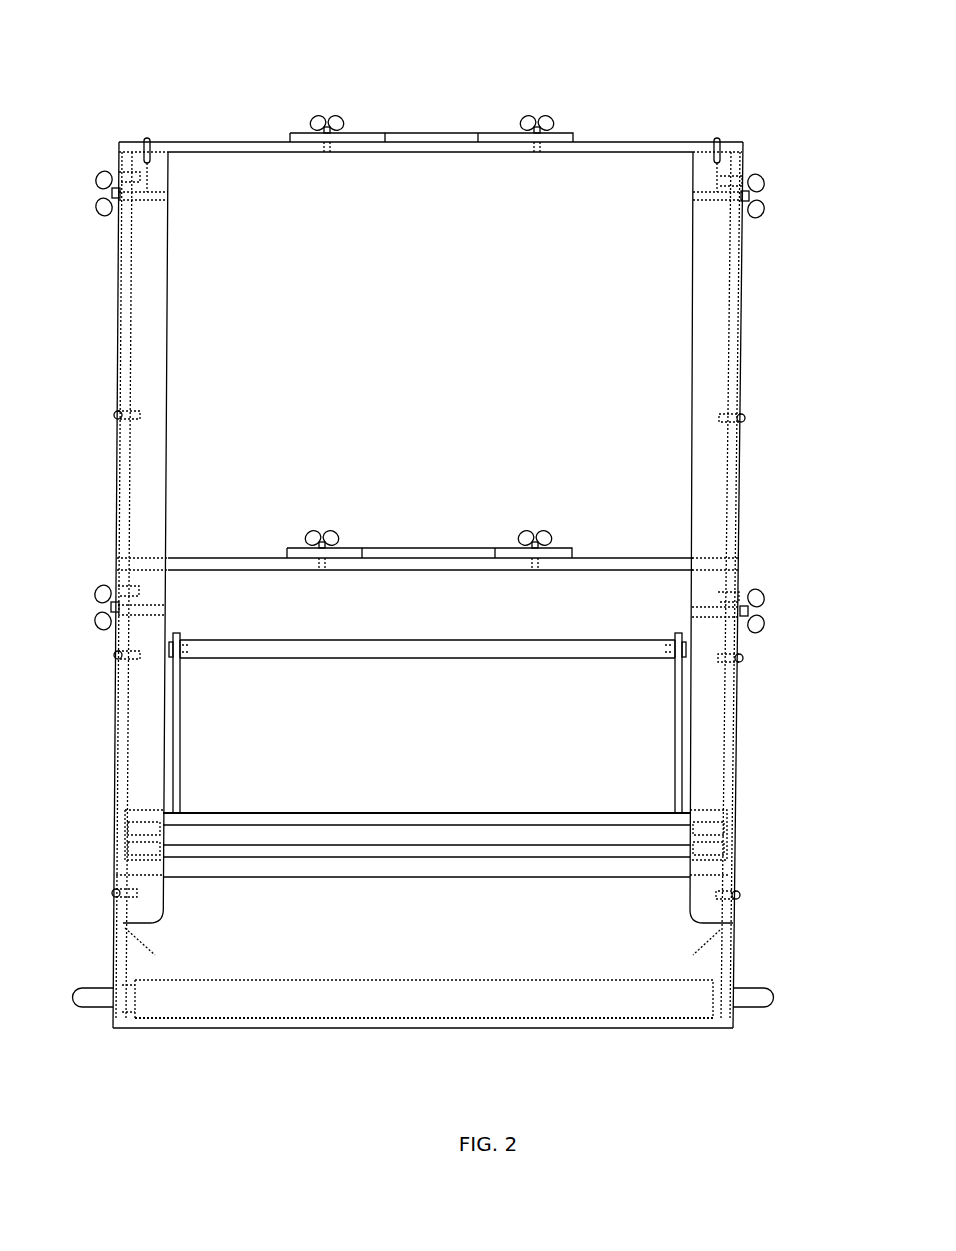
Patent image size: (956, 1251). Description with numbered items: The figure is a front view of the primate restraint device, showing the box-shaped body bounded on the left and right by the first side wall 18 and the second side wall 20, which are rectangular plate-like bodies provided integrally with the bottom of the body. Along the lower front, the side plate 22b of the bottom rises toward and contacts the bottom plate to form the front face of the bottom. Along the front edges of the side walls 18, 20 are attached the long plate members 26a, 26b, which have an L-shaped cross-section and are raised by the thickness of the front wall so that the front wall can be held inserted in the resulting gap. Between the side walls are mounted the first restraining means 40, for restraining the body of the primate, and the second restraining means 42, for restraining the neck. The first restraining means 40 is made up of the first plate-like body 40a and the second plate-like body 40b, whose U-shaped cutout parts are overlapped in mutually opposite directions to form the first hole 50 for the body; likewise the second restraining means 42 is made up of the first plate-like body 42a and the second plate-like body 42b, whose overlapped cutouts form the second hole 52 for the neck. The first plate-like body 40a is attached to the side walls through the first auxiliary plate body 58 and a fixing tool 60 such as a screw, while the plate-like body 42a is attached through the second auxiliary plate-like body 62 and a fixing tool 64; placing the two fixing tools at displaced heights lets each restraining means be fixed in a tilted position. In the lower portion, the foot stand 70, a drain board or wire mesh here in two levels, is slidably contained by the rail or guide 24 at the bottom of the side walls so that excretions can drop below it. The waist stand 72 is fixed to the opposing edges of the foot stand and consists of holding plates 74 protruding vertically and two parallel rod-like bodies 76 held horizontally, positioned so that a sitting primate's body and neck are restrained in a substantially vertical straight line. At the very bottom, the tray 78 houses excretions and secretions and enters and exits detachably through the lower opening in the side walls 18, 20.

The first side wall 18 is at (738, 745).
The second side wall 20 is at (117, 743).
The side plate 22b is at (326, 948).
The rail or guide 24 is at (117, 842).
The long plate member 26a is at (713, 910).
The long plate member 26b is at (137, 907).
The first restraining means 40 is at (515, 497).
The first plate-like body 40a is at (647, 558).
The second plate-like body 40b is at (508, 550).
The second restraining means 42 is at (431, 79).
The first plate-like body 42a is at (640, 145).
The second plate-like body 42b is at (498, 137).
The first hole 50 is at (428, 553).
The second hole 52 is at (432, 140).
The first auxiliary plate body 58 is at (740, 667).
The fixing tool 60 is at (752, 623).
The second auxiliary plate-like body 62 is at (743, 248).
The fixing tool 64 is at (757, 210).
The foot stand 70 is at (628, 822).
The waist stand 72 is at (357, 723).
The holding plate 74 is at (177, 725).
The rod-like body 76 is at (232, 652).
The tray 78 is at (436, 1000).